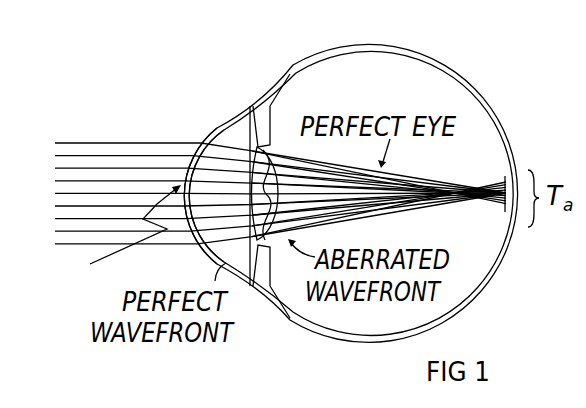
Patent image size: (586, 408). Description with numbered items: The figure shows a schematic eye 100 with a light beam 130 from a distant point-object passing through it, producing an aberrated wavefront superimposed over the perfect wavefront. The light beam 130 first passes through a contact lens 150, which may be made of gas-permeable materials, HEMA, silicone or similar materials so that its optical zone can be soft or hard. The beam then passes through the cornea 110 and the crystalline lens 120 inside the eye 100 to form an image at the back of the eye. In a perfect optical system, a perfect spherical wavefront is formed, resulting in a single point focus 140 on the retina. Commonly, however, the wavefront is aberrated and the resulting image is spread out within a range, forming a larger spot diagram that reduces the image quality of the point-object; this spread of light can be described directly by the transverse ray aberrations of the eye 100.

The schematic eye 100 is at (488, 79).
The cornea 110 is at (207, 131).
The crystalline lens 120 is at (247, 148).
The light beam 130 is at (121, 145).
The single point focus 140 is at (496, 180).
The contact lens 150 is at (114, 238).